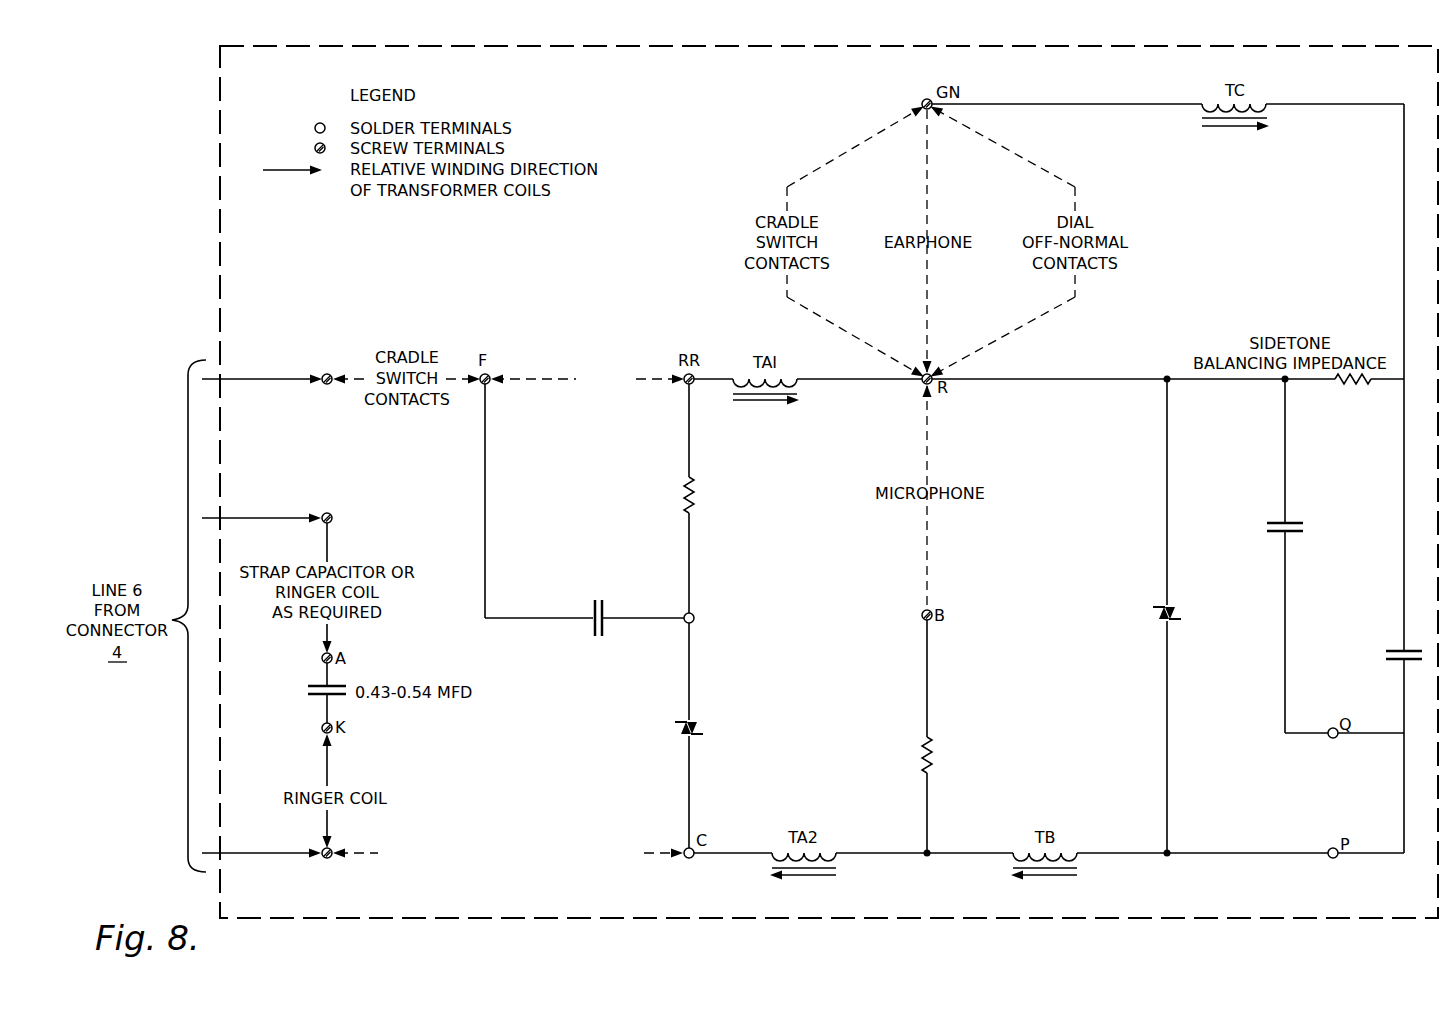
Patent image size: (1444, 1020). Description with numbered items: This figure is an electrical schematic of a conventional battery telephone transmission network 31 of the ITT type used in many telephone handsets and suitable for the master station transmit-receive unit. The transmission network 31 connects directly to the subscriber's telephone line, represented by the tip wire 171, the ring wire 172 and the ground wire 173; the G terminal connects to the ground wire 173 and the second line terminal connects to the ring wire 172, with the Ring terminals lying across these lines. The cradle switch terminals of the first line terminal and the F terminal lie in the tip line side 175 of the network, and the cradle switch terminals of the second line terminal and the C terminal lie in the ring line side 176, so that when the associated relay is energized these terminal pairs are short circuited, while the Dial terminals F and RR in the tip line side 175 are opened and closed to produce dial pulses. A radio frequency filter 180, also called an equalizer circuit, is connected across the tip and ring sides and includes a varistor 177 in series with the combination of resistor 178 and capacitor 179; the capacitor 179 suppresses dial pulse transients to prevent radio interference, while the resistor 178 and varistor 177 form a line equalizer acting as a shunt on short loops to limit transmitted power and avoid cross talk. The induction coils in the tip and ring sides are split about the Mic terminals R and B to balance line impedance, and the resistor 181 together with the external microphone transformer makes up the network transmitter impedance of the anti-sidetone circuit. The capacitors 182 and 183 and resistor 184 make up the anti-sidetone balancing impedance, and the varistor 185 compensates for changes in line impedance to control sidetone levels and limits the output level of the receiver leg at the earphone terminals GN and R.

The transmission network 31 is at (1410, 48).
The tip wire 171 is at (282, 378).
The ring wire 172 is at (256, 852).
The ground wire 173 is at (282, 517).
The tip line side 175 is at (650, 352).
The ring line side 176 is at (642, 868).
The varistor 177 is at (690, 720).
The resistor 178 is at (694, 513).
The capacitor 179 is at (603, 612).
The radio frequency filter 180 is at (514, 637).
The resistor 181 is at (928, 737).
The capacitor 182 is at (1284, 522).
The capacitor 183 is at (1404, 648).
The resistor 184 is at (1336, 386).
The varistor 185 is at (1171, 620).